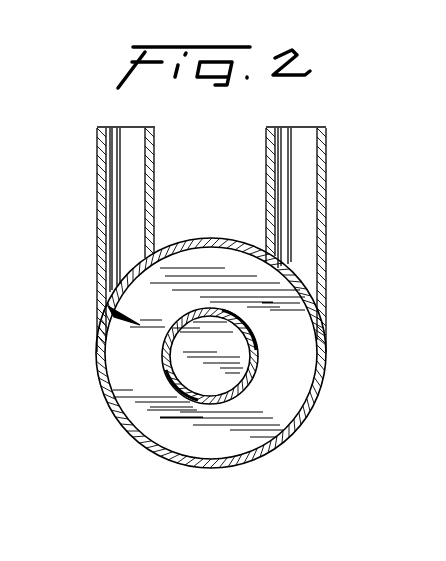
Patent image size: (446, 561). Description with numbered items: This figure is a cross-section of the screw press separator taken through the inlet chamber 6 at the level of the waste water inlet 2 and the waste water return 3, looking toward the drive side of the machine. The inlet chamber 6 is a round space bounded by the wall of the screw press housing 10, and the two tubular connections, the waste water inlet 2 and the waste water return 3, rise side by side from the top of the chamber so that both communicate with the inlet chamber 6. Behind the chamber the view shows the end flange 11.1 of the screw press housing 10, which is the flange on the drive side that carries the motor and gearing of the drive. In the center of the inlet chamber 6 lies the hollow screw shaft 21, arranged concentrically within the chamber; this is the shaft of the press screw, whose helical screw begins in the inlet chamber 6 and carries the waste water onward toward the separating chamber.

The waste water inlet 2 is at (327, 157).
The waste water return 3 is at (97, 163).
The inlet chamber 6 is at (110, 310).
The screw press housing 10 is at (196, 238).
The flange 11.1 is at (127, 358).
The screw shaft 21 is at (258, 350).